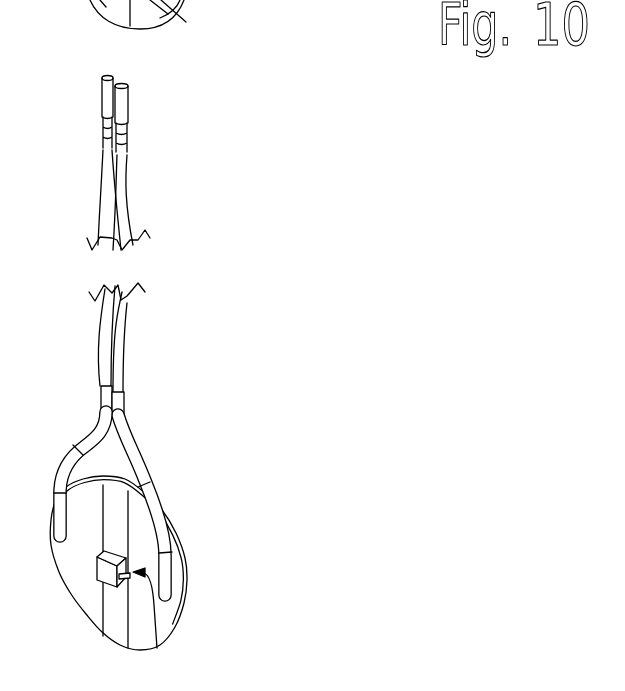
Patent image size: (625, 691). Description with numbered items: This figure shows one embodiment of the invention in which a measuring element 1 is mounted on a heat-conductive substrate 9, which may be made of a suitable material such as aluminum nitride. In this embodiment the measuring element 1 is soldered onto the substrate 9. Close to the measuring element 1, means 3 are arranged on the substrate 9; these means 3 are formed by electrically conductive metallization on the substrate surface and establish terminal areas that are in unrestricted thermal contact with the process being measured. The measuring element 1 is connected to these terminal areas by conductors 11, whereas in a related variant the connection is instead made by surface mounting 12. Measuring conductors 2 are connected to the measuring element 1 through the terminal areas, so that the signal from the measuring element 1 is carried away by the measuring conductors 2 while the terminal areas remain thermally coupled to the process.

The measuring element 1 is at (109, 573).
The measuring conductors 2 is at (75, 450).
The means establishing terminal areas 3 is at (168, 14).
The heat-conductive substrate 9 is at (113, 527).
The conductors 11 is at (151, 621).
The surface mounting 12 is at (85, 0).